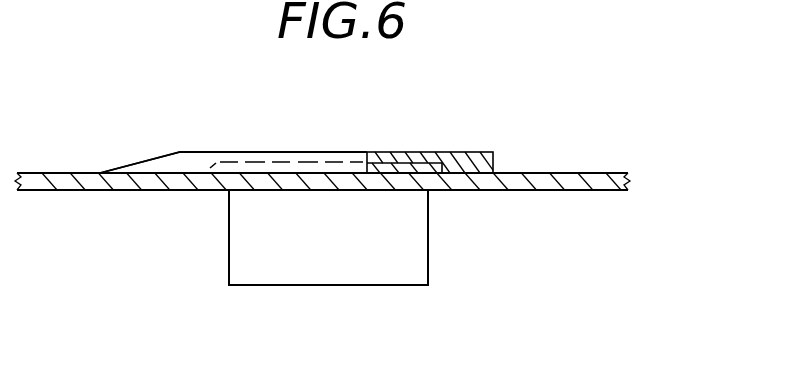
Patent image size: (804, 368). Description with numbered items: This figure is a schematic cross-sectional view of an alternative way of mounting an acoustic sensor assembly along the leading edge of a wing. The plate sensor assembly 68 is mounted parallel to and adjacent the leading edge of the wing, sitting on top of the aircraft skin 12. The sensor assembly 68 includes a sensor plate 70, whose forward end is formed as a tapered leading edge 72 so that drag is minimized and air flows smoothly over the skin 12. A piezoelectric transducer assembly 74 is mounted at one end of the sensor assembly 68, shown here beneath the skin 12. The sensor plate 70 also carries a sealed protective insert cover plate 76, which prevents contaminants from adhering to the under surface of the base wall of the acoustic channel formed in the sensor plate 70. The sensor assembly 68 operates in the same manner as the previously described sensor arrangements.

The aircraft skin 12 is at (563, 172).
The plate sensor assembly 68 is at (259, 152).
The sensor plate 70 is at (425, 152).
The tapered leading edge 72 is at (132, 163).
The piezoelectric transducer assembly 74 is at (248, 229).
The sealed protective insert cover plate 76 is at (428, 170).